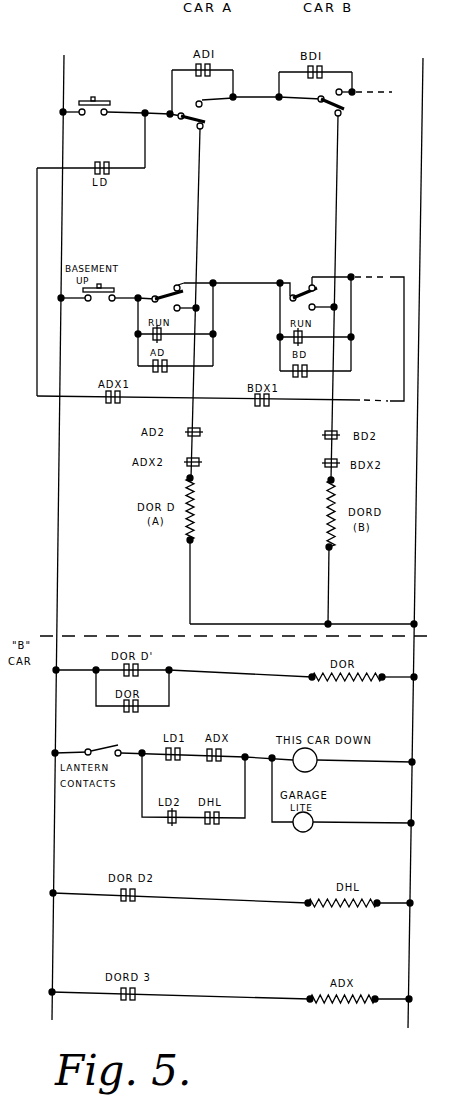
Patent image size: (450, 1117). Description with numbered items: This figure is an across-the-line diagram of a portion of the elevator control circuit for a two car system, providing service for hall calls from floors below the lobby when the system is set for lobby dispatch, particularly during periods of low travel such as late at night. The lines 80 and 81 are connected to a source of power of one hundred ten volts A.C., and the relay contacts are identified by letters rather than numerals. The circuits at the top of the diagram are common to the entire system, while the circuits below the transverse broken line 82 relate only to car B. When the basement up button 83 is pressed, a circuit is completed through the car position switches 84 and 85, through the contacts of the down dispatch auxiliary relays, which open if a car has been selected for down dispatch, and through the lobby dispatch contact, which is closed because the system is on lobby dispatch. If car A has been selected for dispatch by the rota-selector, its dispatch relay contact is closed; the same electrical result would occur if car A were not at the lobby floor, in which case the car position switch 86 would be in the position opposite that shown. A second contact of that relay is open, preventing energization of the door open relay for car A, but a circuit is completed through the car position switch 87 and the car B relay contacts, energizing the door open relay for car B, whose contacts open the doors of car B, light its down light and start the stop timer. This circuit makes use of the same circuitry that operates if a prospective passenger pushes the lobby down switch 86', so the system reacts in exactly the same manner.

The line 80 is at (64, 58).
The line 81 is at (423, 62).
The transverse broken line 82 is at (72, 634).
The basement up button 83 is at (112, 290).
The car position switch 84 is at (168, 286).
The car position switch 85 is at (297, 293).
The car position switch 86 is at (191, 105).
The lobby down switch 86' is at (120, 86).
The car position switch 87 is at (331, 107).